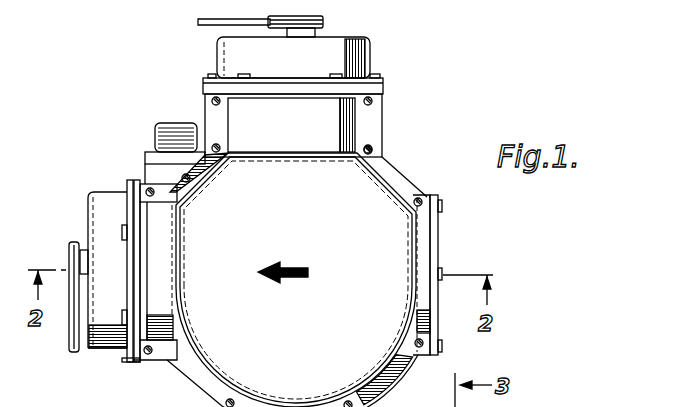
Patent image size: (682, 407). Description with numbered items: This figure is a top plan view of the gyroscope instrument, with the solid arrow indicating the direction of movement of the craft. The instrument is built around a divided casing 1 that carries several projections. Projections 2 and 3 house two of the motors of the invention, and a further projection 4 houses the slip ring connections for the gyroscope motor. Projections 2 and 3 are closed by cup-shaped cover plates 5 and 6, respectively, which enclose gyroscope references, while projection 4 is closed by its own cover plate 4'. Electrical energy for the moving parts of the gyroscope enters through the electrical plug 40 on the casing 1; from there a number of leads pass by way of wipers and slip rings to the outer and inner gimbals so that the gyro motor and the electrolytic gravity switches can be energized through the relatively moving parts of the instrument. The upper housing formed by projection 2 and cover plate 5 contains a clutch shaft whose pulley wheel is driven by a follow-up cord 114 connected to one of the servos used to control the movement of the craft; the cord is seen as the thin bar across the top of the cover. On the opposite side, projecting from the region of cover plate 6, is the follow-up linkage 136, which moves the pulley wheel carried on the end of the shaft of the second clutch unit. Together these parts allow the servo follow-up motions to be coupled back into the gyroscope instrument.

The divided casing 1 is at (377, 184).
The projection 2 is at (345, 119).
The projection 3 is at (150, 209).
The projection 4 is at (440, 275).
The cover plate 4' is at (452, 275).
The cup-shaped cover plate 5 is at (353, 58).
The cup-shaped cover plate 6 is at (98, 213).
The electrical plug 40 is at (155, 131).
The follow-up cord 114 is at (218, 23).
The follow-up linkage 136 is at (77, 337).